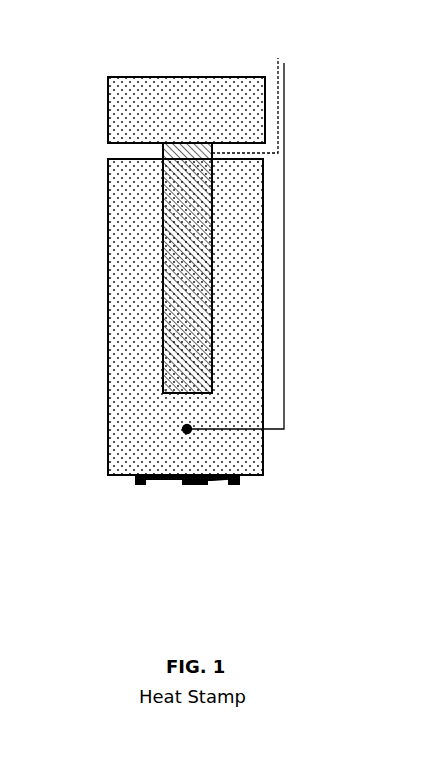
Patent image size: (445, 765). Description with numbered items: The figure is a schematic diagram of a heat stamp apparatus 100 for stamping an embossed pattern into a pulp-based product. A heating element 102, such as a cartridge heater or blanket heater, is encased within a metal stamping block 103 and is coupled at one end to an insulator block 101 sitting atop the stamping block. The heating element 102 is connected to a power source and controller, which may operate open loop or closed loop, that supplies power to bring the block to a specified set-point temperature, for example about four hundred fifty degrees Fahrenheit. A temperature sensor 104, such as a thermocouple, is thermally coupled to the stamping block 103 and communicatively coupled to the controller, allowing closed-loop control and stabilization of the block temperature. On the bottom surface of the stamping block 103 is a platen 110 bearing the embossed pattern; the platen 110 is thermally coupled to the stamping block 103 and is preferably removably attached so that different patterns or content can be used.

The heat stamp apparatus 100 is at (128, 23).
The insulator block 101 is at (108, 134).
The heating element 102 is at (163, 272).
The stamping block 103 is at (253, 447).
The temperature sensor 104 is at (187, 429).
The platen 110 is at (188, 487).